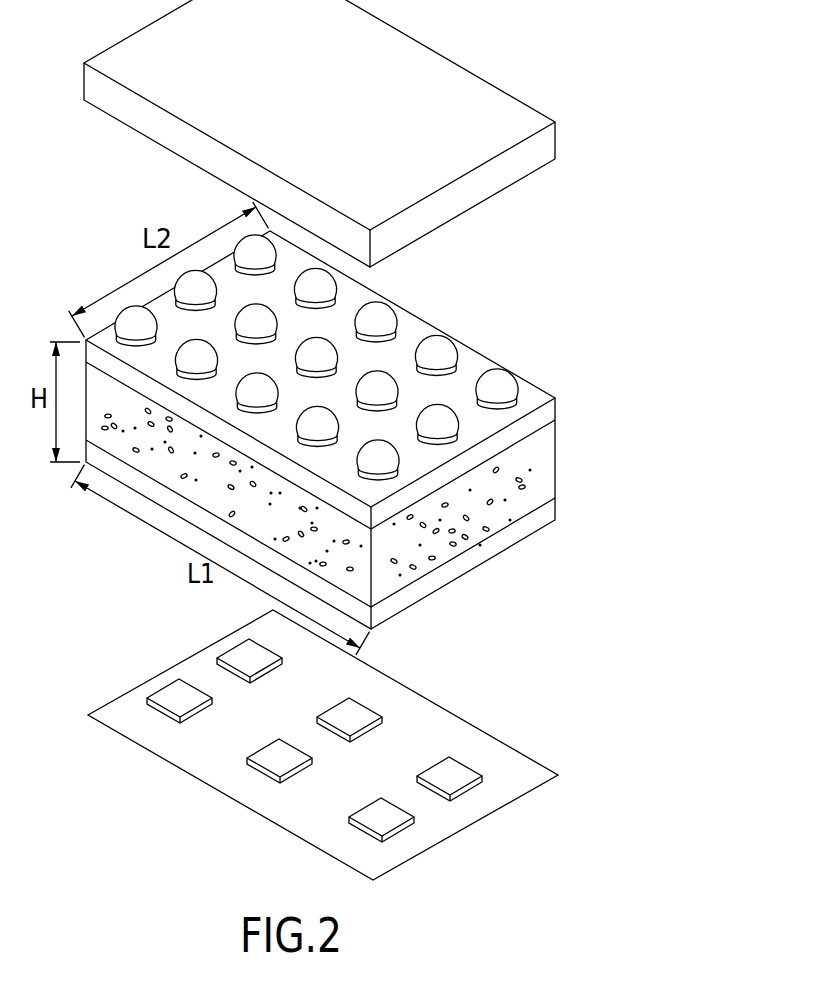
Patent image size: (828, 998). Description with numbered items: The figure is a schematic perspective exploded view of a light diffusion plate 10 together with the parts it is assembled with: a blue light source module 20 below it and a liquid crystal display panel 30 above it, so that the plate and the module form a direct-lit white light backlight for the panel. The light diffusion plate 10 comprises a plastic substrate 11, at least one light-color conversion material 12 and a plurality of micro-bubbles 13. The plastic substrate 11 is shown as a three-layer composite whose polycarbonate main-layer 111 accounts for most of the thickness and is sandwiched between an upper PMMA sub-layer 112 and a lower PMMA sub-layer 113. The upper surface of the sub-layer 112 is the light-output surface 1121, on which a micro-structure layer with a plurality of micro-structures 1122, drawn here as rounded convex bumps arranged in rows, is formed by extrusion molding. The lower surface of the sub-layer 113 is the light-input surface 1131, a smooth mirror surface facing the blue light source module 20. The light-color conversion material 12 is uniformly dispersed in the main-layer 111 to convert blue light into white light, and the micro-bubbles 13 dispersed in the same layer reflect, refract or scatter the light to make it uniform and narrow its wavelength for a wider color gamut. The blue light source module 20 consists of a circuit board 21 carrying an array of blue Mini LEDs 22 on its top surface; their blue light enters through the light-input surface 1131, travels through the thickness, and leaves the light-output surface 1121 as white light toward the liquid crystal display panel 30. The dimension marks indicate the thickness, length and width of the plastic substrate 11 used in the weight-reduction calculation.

The light diffusion plate 10 is at (399, 436).
The plastic substrate 11 is at (363, 436).
The main-layer 111 is at (345, 524).
The sub-layer 112 is at (347, 382).
The sub-layer 113 is at (345, 534).
The light-output surface 1121 is at (527, 393).
The micro-structures 1122 is at (436, 352).
The light-input surface 1131 is at (527, 537).
The light-color conversion material 12 is at (475, 538).
The micro-bubbles 13 is at (448, 530).
The blue light source module 20 is at (374, 745).
The circuit board 21 is at (458, 733).
The blue Mini LEDs 22 is at (390, 818).
The liquid crystal display panel 30 is at (578, 115).